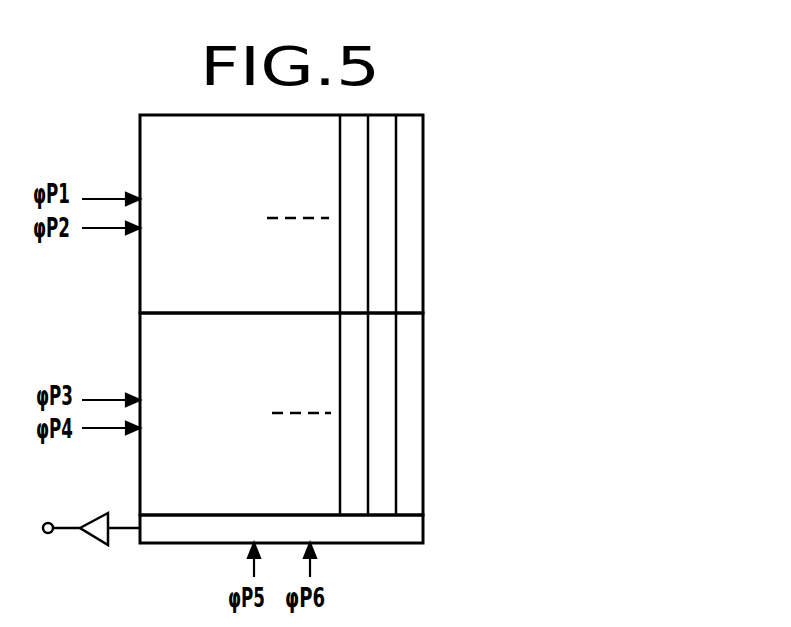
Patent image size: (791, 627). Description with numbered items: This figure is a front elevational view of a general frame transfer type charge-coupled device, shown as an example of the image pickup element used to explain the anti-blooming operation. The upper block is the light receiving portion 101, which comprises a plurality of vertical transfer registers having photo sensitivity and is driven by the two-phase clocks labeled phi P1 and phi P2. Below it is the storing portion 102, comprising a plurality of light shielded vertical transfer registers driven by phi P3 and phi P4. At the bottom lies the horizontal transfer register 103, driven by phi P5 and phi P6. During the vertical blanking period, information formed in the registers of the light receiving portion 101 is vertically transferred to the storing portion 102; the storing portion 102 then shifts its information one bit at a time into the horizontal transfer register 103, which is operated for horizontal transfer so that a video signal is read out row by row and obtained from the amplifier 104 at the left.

The light receiving portion 101 is at (423, 210).
The storing portion 102 is at (423, 415).
The horizontal transfer register 103 is at (423, 531).
The amplifier 104 is at (92, 540).